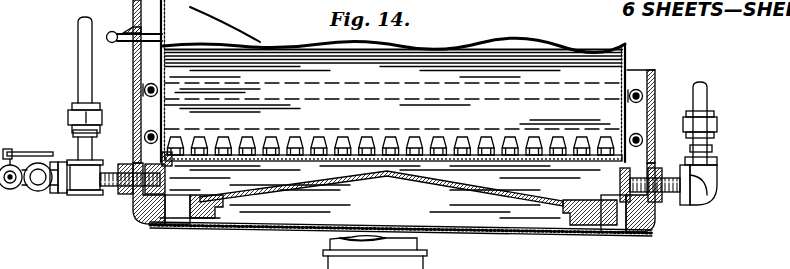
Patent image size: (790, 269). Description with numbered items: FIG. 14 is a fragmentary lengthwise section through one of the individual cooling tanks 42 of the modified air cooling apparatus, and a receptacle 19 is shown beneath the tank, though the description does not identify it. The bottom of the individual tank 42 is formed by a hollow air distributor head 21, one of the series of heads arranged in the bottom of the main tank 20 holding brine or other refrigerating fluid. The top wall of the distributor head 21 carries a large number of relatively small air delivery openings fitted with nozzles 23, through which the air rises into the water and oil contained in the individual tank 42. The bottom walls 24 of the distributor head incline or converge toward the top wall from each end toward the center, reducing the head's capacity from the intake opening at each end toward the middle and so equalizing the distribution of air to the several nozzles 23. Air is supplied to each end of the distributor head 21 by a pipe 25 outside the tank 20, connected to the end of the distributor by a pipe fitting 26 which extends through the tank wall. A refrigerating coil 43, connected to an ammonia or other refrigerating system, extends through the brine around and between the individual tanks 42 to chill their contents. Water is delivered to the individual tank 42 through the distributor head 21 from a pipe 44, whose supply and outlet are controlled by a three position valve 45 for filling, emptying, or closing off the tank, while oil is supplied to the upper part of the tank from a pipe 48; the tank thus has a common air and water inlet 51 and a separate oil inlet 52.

The receptacle 19 is at (398, 252).
The tank 20 is at (655, 71).
The air distributor head 21 is at (541, 185).
The nozzles 23 is at (430, 134).
The bottom walls 24 is at (312, 190).
The pipe 25 is at (79, 72).
The pipe fitting 26 is at (110, 192).
The individual tank 42 is at (628, 48).
The refrigerating coil 43 is at (140, 110).
The pipe 44 is at (43, 192).
The three position valve 45 is at (8, 192).
The pipe 48 is at (112, 30).
The common air and water inlet 51 is at (182, 215).
The oil inlet 52 is at (200, 27).